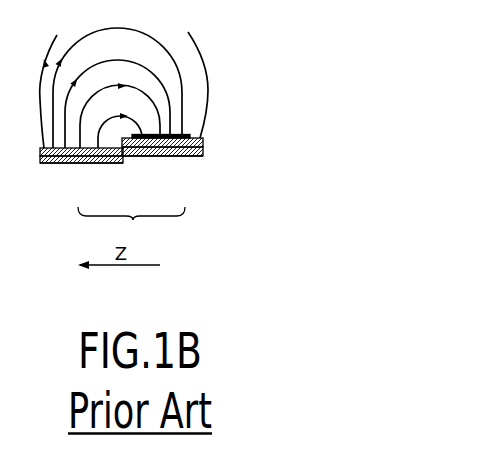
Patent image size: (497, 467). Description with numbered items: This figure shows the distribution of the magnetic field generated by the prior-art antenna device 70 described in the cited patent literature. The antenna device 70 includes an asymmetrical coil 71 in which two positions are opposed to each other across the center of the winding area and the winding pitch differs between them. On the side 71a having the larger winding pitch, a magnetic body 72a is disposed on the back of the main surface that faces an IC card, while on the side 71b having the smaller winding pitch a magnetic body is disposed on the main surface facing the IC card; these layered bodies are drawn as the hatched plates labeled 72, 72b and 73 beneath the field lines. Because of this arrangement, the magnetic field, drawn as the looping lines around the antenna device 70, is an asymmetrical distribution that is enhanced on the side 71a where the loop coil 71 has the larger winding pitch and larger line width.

The antenna device 70 is at (224, 71).
The coil 71 is at (131, 224).
The side having a larger winding pitch 71a is at (148, 157).
The side having a smaller winding pitch 71b is at (86, 164).
The substrate 72 is at (203, 155).
The magnetic body 72a is at (192, 157).
The second substrate portion 72b is at (56, 165).
The magnetic sheet 73 is at (203, 139).